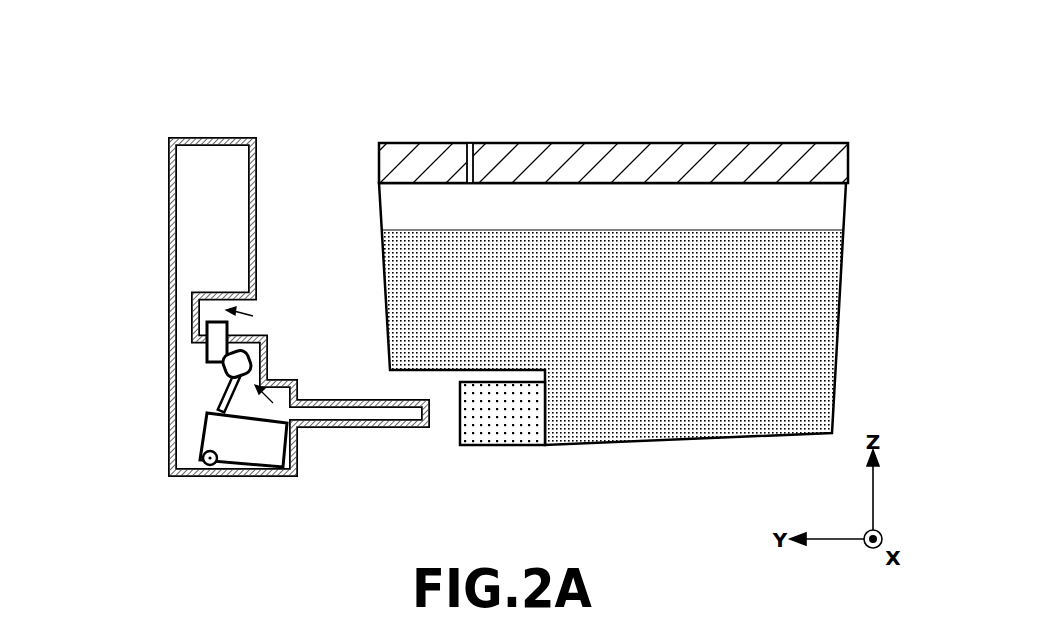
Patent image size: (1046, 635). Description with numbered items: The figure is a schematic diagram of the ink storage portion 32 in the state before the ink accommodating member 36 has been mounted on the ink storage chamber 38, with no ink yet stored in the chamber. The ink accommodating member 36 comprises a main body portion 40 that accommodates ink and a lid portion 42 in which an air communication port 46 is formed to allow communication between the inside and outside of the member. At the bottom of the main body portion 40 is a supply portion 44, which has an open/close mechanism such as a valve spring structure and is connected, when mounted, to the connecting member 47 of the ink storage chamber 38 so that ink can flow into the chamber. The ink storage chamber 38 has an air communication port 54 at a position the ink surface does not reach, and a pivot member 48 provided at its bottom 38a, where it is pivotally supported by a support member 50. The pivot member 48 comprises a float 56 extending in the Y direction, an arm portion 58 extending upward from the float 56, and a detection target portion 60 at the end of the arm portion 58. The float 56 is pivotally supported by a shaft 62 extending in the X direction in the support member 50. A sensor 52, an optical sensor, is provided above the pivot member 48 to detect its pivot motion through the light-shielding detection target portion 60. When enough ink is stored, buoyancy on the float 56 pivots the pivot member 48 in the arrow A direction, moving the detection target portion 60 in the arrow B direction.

The ink storage portion 32 is at (212, 42).
The ink accommodating member 36 is at (408, 140).
The ink storage chamber 38 is at (217, 137).
The bottom 38a is at (285, 473).
The main body portion 40 is at (822, 205).
The lid portion 42 is at (679, 143).
The supply portion 44 is at (508, 436).
The air communication port 46 is at (468, 143).
The connecting member 47 is at (357, 421).
The pivot member 48 is at (70, 315).
The support member 50 is at (194, 468).
The sensor 52 is at (218, 323).
The air communication port 54 is at (257, 178).
The float 56 is at (242, 418).
The arm portion 58 is at (228, 390).
The detection target portion 60 is at (237, 359).
The shaft 62 is at (210, 465).